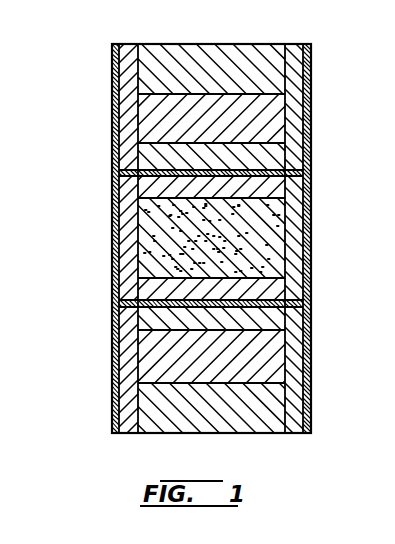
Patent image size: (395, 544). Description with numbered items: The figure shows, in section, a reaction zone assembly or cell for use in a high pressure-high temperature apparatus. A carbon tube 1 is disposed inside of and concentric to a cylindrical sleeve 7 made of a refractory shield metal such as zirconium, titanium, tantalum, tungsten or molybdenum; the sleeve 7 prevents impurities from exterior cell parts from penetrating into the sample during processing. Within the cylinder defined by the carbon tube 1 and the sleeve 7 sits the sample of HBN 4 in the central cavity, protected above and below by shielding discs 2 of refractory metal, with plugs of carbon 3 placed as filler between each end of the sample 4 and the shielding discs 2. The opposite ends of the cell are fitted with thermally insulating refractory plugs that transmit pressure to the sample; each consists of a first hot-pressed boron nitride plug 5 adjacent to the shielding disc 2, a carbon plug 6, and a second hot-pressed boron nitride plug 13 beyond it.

The carbon tube 1 is at (130, 78).
The shielding disc 2 is at (128, 186).
The carbon plug 3 is at (281, 189).
The sample of HBN 4 is at (150, 242).
The first hot-pressed boron nitride plug 5 is at (135, 160).
The carbon plug 6 is at (272, 121).
The cylindrical sleeve 7 is at (312, 233).
The second hot-pressed boron nitride plug 13 is at (192, 57).